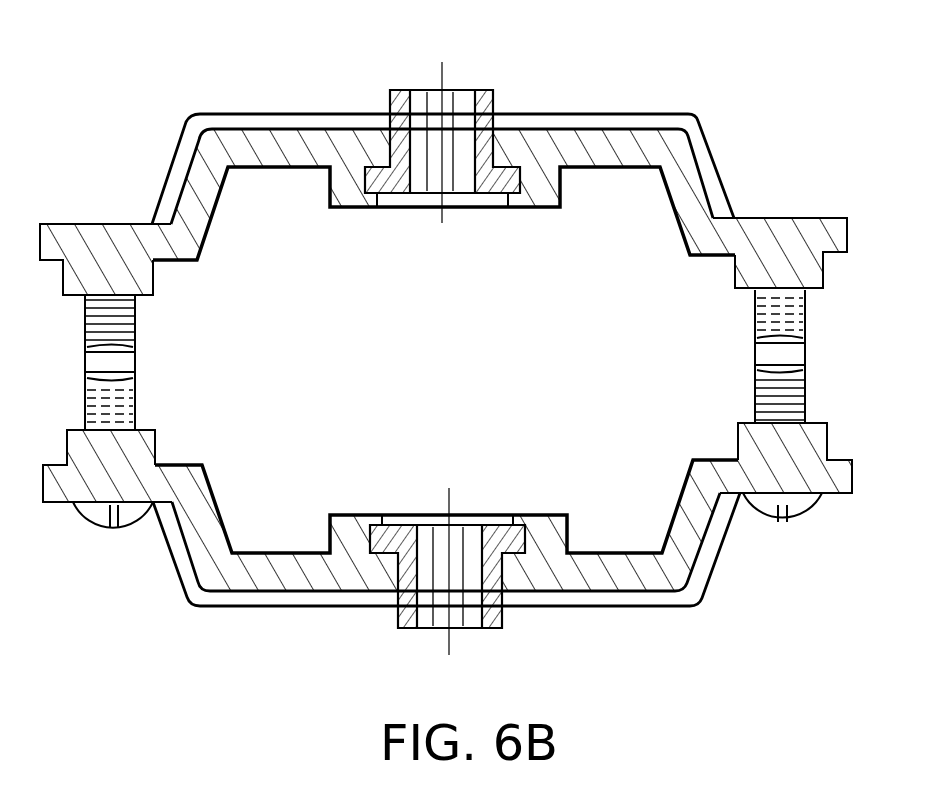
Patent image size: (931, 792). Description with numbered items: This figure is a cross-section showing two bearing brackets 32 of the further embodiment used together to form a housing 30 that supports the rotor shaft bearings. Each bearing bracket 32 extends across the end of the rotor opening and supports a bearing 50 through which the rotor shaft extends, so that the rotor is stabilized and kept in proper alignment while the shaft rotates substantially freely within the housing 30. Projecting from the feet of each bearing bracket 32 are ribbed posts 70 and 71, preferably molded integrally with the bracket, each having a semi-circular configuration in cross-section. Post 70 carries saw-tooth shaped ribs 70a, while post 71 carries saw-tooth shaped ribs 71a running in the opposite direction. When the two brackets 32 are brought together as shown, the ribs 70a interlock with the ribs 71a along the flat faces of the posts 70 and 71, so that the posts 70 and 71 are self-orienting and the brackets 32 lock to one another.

The housing 30 is at (862, 219).
The bearing bracket 32 is at (214, 106).
The bearing 50 is at (499, 74).
The post 70 is at (85, 322).
The saw-tooth shaped ribs 70a is at (135, 330).
The post 71 is at (806, 315).
The saw-tooth shaped ribs 71a is at (123, 392).